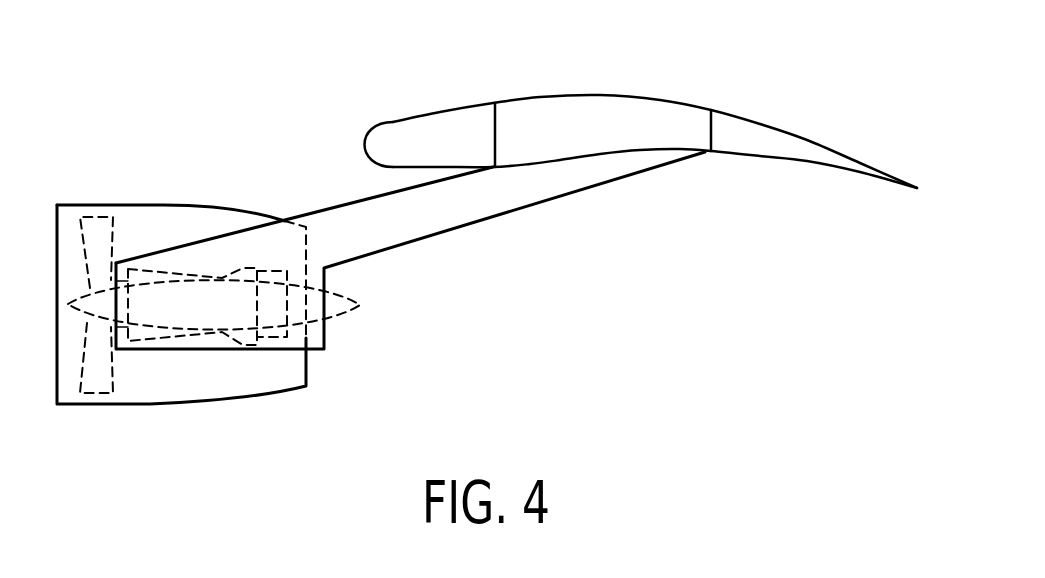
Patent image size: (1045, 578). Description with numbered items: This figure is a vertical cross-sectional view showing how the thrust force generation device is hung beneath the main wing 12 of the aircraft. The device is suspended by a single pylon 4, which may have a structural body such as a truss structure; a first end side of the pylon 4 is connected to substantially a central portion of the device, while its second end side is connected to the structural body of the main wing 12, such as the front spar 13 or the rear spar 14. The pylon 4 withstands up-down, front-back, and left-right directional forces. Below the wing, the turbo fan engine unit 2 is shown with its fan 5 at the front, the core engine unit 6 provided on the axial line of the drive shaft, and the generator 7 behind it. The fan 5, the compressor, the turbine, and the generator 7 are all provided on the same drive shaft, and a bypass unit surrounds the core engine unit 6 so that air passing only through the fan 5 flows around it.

The turbo fan engine unit 2 is at (180, 186).
The pylon 4 is at (462, 228).
The fan 5 is at (93, 222).
The core engine unit 6 is at (173, 325).
The generator 7 is at (272, 335).
The main wing 12 is at (608, 95).
The front spar 13 is at (497, 127).
The rear spar 14 is at (712, 128).